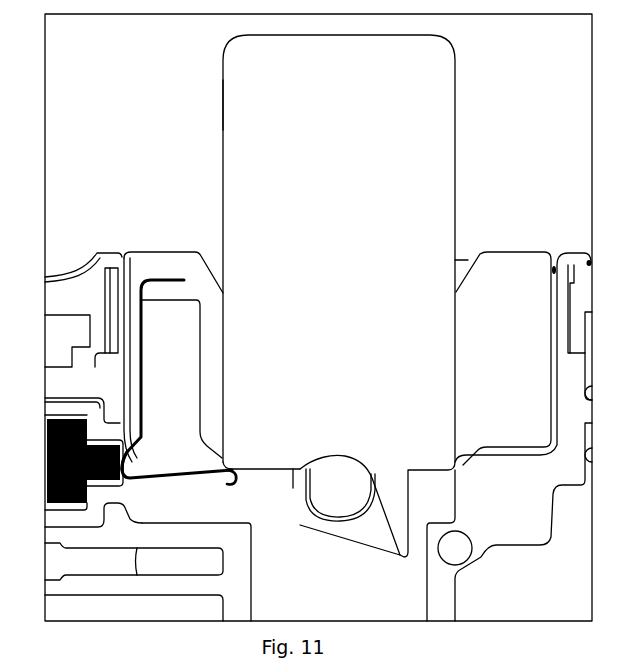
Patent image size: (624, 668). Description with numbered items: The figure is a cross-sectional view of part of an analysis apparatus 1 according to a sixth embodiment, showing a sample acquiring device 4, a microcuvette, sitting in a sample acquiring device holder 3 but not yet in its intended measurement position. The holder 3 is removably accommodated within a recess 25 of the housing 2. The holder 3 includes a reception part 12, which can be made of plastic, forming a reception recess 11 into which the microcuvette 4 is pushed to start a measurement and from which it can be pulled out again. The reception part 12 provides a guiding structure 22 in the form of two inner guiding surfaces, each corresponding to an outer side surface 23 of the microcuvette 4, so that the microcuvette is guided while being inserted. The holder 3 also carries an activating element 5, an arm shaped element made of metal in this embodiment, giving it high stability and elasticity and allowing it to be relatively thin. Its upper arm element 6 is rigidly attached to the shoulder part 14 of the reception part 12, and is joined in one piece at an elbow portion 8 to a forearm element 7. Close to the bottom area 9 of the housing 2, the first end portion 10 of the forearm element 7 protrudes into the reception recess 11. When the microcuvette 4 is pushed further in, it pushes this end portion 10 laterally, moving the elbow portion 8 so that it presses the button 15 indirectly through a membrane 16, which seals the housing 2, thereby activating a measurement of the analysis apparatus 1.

The analysis apparatus 1 is at (158, 162).
The housing 2 is at (541, 528).
The sample acquiring device holder 3 is at (495, 238).
The sample acquiring device 4 is at (415, 88).
The activating element 5 is at (162, 385).
The upper arm element 6 is at (147, 341).
The forearm element 7 is at (183, 479).
The elbow portion 8 is at (135, 475).
The bottom area 9 is at (395, 597).
The first end portion 10 is at (247, 494).
The reception recess 11 is at (263, 466).
The reception part 12 is at (512, 267).
The shoulder part 14 is at (167, 262).
The button 15 is at (48, 473).
The membrane 16 is at (70, 517).
The guiding structure 22 is at (236, 343).
The outer side surface 23 is at (222, 103).
The recess 25 is at (132, 322).